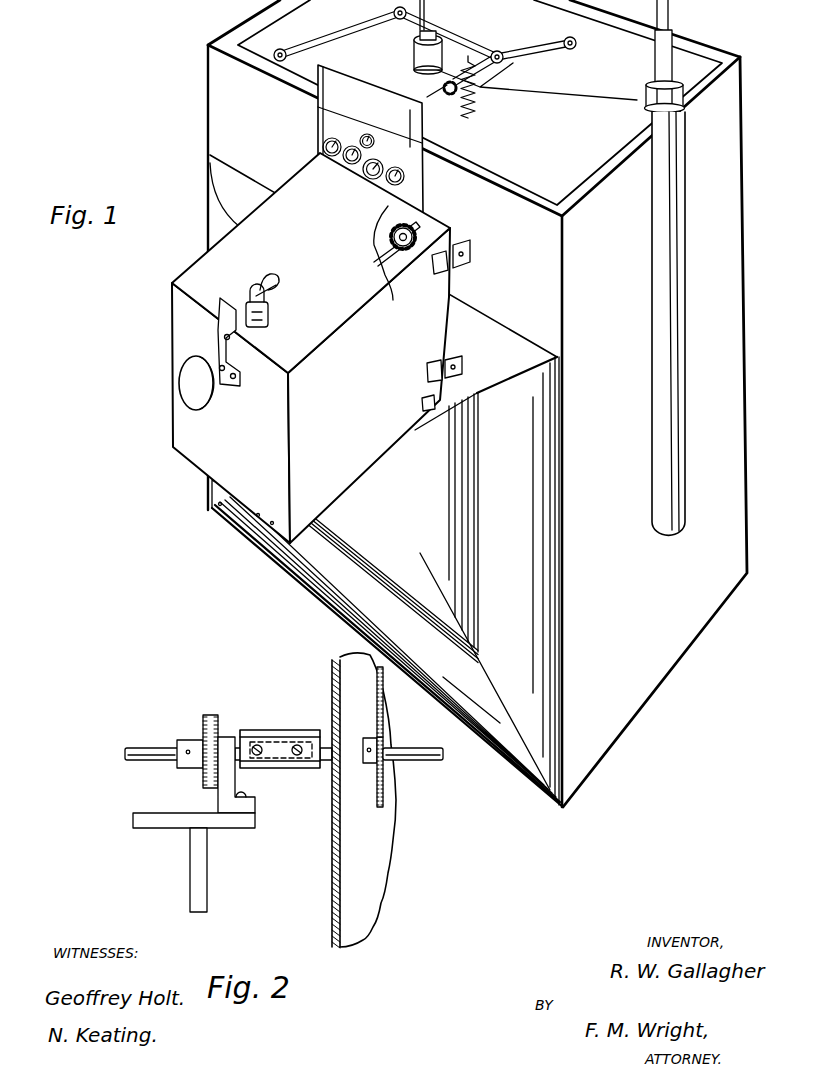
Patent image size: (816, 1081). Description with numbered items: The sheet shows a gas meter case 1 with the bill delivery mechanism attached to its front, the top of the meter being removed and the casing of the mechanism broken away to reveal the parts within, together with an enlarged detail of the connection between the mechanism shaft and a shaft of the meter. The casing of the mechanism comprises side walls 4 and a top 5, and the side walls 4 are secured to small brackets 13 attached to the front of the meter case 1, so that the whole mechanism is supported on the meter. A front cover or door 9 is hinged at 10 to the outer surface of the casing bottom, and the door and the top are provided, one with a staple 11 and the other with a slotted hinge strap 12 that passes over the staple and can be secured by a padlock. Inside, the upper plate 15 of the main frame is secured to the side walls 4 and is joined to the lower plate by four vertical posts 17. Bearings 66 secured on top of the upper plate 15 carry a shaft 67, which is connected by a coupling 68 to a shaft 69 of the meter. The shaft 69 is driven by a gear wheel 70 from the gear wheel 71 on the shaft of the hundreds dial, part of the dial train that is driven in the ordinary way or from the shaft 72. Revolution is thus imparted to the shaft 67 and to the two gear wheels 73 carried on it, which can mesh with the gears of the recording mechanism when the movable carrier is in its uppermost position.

In FIG. 1, the meter case 1 is at (218, 86).
In FIG. 2, the meter case 1 is at (333, 878).
In FIG. 1, the side walls 4 is at (369, 385).
In FIG. 1, the top 5 is at (311, 263).
In FIG. 1, the front cover or door 9 is at (231, 413).
In FIG. 1, the hinge 10 is at (187, 455).
In FIG. 1, the staple 11 is at (260, 283).
In FIG. 1, the slotted hinge strap 12 is at (273, 293).
In FIG. 1, the brackets 13 is at (470, 253).
In FIG. 2, the upper plate 15 is at (155, 828).
In FIG. 2, the vertical posts 17 is at (207, 882).
In FIG. 2, the bearings 66 is at (235, 787).
In FIG. 1, the shaft 67 is at (391, 284).
In FIG. 2, the shaft 67 is at (147, 750).
In FIG. 2, the coupling 68 is at (280, 728).
In FIG. 2, the shaft 69 is at (435, 762).
In FIG. 2, the gear wheel 70 is at (384, 797).
In FIG. 2, the gear wheel 71 is at (381, 683).
In FIG. 1, the shaft 72 is at (427, 95).
In FIG. 1, the gear wheels 73 is at (418, 232).